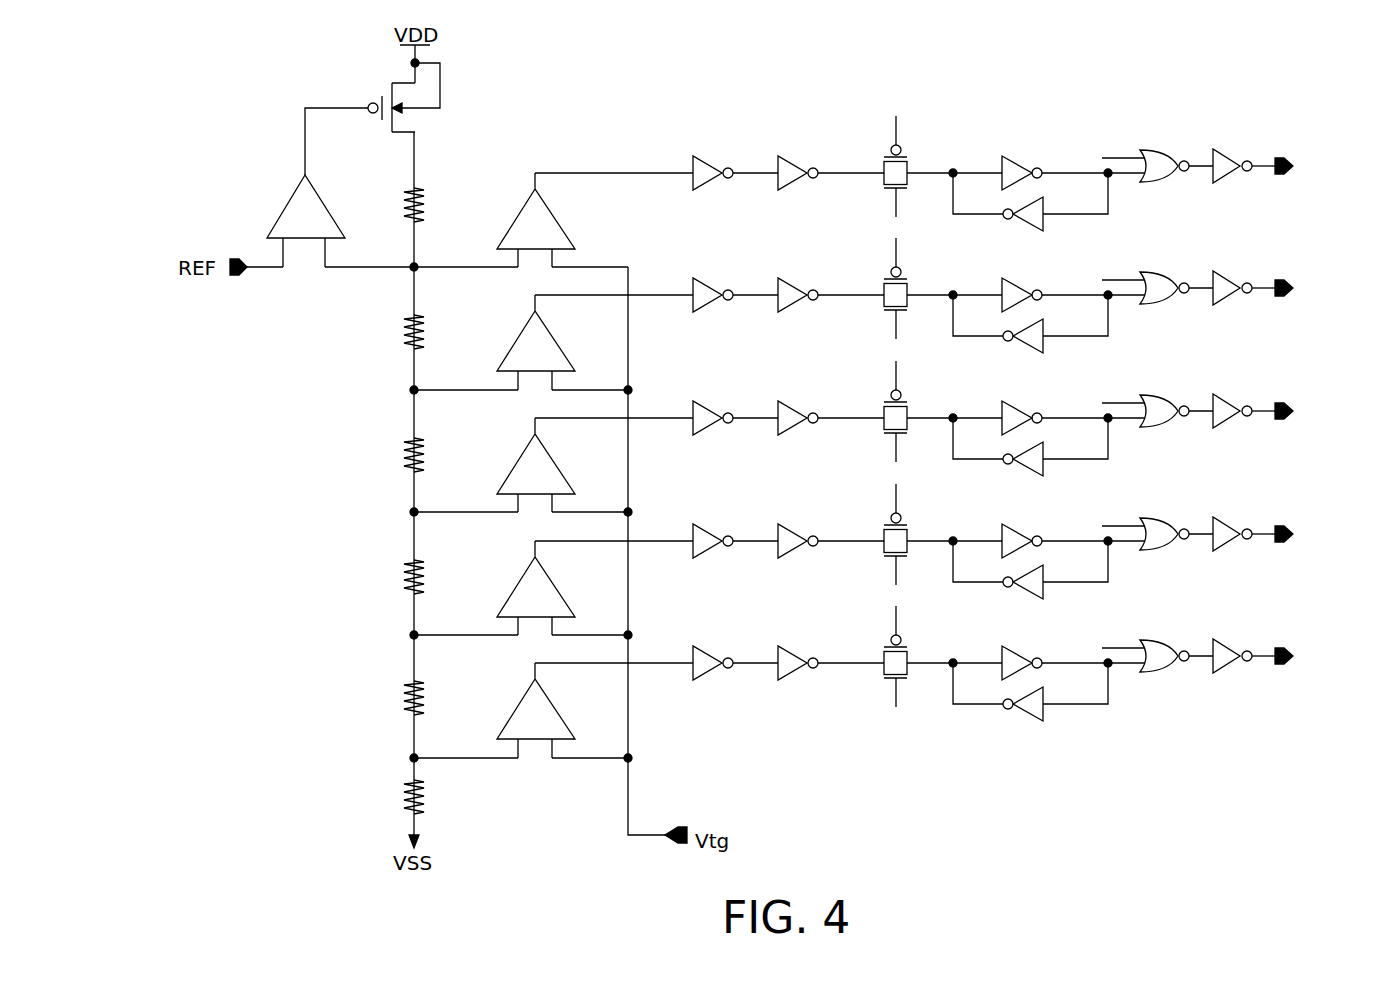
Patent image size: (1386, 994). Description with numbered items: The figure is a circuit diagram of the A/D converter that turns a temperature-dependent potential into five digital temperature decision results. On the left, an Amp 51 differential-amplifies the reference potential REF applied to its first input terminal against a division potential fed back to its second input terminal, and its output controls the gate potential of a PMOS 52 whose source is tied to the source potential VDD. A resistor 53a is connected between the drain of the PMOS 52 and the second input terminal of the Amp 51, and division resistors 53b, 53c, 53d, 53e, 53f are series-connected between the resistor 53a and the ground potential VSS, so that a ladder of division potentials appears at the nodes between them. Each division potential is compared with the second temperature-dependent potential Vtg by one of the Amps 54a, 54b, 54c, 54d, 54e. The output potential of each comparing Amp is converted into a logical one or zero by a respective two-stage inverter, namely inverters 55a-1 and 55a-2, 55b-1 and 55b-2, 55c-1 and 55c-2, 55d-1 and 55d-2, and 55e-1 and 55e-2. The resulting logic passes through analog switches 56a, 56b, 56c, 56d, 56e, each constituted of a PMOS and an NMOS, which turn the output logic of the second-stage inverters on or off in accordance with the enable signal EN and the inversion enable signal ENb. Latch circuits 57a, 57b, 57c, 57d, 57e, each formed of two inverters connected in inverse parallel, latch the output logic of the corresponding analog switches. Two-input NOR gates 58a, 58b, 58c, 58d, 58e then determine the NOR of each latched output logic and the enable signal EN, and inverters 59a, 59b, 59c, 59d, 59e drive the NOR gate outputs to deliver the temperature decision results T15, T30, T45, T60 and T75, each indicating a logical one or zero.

The Amp 51 is at (292, 198).
The PMOS 52 is at (440, 62).
The resistor 53a is at (409, 195).
The division resistor 53b is at (400, 327).
The division resistor 53c is at (400, 450).
The division resistor 53d is at (400, 572).
The division resistor 53e is at (400, 693).
The division resistor 53f is at (398, 795).
The Amp 54a is at (562, 230).
The Amp 54b is at (562, 352).
The Amp 54c is at (562, 475).
The Amp 54d is at (562, 598).
The Amp 54e is at (562, 720).
The inverter 55a-1 is at (712, 142).
The inverter 55a-2 is at (797, 142).
The inverter 55b-1 is at (712, 264).
The inverter 55b-2 is at (797, 264).
The inverter 55c-1 is at (712, 387).
The inverter 55c-2 is at (797, 387).
The inverter 55d-1 is at (712, 510).
The inverter 55d-2 is at (797, 510).
The inverter 55e-1 is at (712, 632).
The inverter 55e-2 is at (797, 632).
The analog switch 56a is at (909, 163).
The analog switch 56b is at (909, 285).
The analog switch 56c is at (909, 408).
The analog switch 56d is at (909, 531).
The analog switch 56e is at (909, 653).
The latch circuit 57a is at (1097, 203).
The latch circuit 57b is at (1097, 325).
The latch circuit 57c is at (1097, 448).
The latch circuit 57d is at (1097, 571).
The latch circuit 57e is at (1097, 693).
The NOR gate 58a is at (1164, 151).
The NOR gate 58b is at (1164, 273).
The NOR gate 58c is at (1164, 396).
The NOR gate 58d is at (1164, 519).
The NOR gate 58e is at (1164, 641).
The inverter 59a is at (1220, 150).
The inverter 59b is at (1220, 272).
The inverter 59c is at (1220, 395).
The inverter 59d is at (1220, 518).
The inverter 59e is at (1220, 640).